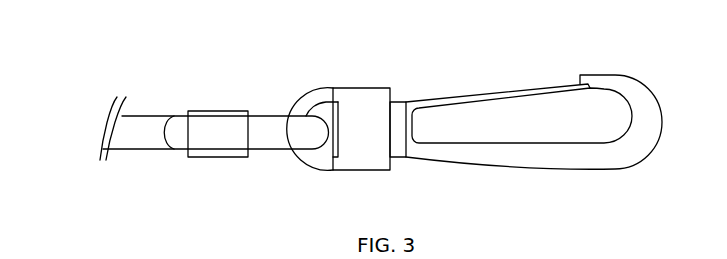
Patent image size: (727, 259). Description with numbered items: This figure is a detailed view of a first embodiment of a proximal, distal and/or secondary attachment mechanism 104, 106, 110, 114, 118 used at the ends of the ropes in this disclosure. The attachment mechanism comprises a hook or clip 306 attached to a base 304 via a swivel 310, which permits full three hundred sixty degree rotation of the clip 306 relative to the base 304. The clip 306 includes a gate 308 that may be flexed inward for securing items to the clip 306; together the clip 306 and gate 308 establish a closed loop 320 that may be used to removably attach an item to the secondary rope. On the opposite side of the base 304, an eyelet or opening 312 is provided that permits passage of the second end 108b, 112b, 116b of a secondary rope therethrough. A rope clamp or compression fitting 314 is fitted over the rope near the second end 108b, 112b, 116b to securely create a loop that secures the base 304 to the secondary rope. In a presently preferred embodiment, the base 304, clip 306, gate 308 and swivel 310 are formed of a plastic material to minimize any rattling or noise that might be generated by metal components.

The attachment mechanism 104 is at (357, 120).
The attachment mechanism 106 is at (357, 120).
The attachment mechanism 110 is at (357, 120).
The attachment mechanism 114 is at (357, 120).
The attachment mechanism 118 is at (170, 78).
The second end of secondary rope 108b is at (175, 159).
The second end of secondary rope 112b is at (175, 159).
The second end of secondary rope 116b is at (137, 140).
The base 304 is at (363, 98).
The hook or clip 306 is at (662, 118).
The gate 308 is at (512, 91).
The swivel 310 is at (397, 158).
The eyelet or opening 312 is at (330, 148).
The rope clamp or compression fitting 314 is at (211, 122).
The closed loop 320 is at (597, 112).